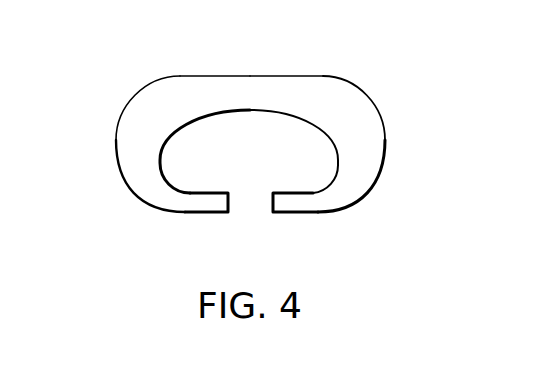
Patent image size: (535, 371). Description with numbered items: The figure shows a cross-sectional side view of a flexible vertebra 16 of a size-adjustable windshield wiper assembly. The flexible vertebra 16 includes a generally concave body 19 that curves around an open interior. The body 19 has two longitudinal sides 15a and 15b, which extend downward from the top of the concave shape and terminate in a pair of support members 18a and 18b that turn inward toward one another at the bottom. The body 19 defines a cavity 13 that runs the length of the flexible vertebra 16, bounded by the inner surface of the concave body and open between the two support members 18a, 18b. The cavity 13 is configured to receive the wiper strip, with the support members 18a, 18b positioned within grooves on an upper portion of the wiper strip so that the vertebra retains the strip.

The cavity 13 is at (180, 163).
The longitudinal side 15a is at (115, 143).
The longitudinal side 15b is at (386, 143).
The flexible vertebra 16 is at (183, 77).
The body 19 is at (318, 82).
The support member 18a is at (210, 214).
The support member 18b is at (289, 214).